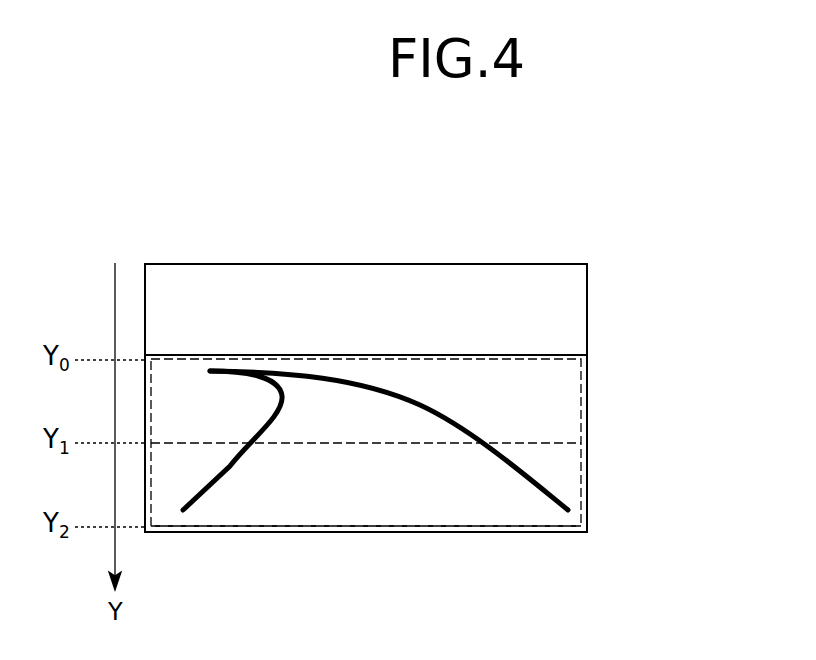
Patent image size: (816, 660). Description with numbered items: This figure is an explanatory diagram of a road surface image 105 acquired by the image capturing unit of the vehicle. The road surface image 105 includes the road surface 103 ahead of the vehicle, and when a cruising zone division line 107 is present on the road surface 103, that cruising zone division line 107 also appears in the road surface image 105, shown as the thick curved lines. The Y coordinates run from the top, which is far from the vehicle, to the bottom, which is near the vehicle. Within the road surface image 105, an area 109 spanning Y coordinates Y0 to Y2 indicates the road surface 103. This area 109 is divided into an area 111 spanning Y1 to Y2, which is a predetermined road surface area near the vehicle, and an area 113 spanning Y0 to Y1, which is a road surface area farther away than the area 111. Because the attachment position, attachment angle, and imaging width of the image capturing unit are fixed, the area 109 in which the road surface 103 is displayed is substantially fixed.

The road surface 103 is at (324, 423).
The road surface image 105 is at (420, 264).
The cruising zone division line 107 is at (248, 443).
The area 109 is at (695, 375).
The area 111 is at (557, 485).
The area 113 is at (557, 423).